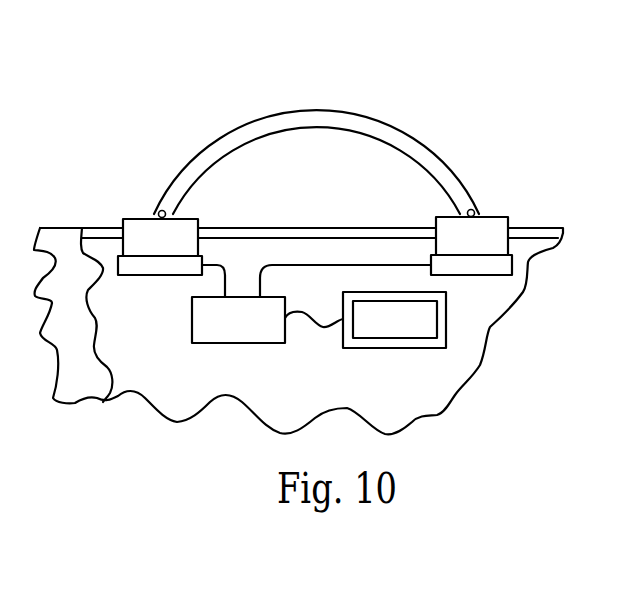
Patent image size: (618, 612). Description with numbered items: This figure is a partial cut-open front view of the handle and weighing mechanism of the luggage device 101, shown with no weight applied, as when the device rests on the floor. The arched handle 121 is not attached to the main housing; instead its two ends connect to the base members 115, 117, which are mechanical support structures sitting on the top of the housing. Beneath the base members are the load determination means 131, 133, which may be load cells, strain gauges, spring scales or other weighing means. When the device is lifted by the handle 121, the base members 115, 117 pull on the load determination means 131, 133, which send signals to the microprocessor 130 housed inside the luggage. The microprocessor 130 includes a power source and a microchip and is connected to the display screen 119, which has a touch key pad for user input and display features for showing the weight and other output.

The luggage device 101 is at (453, 125).
The handle 121 is at (317, 122).
The base member 115 is at (145, 233).
The base member 117 is at (488, 230).
The load determination means 131 is at (175, 270).
The load determination means 133 is at (495, 268).
The microprocessor 130 is at (262, 337).
The display screen 119 is at (407, 330).